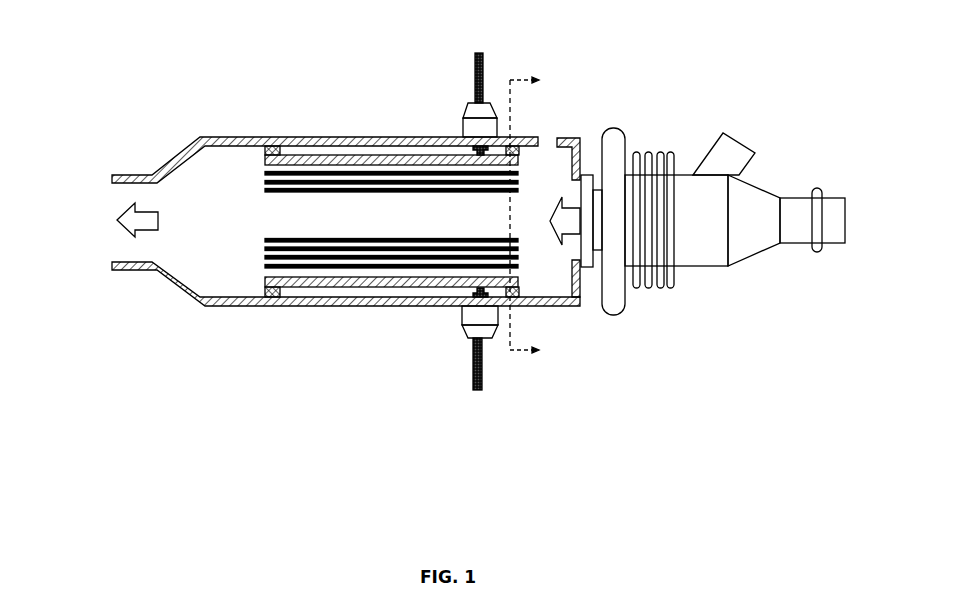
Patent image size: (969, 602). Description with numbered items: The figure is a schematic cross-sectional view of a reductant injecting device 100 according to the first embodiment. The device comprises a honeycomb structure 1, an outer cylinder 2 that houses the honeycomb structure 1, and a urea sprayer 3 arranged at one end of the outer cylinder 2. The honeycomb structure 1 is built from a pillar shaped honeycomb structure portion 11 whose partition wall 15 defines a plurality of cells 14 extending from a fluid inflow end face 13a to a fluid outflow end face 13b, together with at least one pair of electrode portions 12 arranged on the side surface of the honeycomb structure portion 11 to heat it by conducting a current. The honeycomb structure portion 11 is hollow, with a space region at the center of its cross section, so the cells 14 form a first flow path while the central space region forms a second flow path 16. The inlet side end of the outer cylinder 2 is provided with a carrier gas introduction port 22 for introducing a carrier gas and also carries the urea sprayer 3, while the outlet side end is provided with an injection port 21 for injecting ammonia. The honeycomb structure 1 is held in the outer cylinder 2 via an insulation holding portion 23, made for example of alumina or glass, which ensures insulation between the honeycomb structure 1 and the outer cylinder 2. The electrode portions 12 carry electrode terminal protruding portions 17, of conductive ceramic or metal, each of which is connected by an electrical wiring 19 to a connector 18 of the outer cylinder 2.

The reductant injecting device 100 is at (480, 527).
The honeycomb structure 1 is at (392, 457).
The outer cylinder 2 is at (362, 137).
The urea sprayer 3 is at (688, 212).
The honeycomb structure portion 11 is at (353, 413).
The electrode portions 12 is at (373, 282).
The fluid inflow end face 13a is at (517, 240).
The fluid outflow end face 13b is at (263, 173).
The cells 14 is at (330, 263).
The partition wall 15 is at (295, 265).
The second flow path 16 is at (290, 222).
The electrode terminal protruding portions 17 is at (463, 147).
The connector 18 is at (471, 316).
The electrical wiring 19 is at (483, 373).
The injection port 21 is at (130, 243).
The carrier gas introduction port 22 is at (550, 140).
The insulation holding portion 23 is at (274, 150).